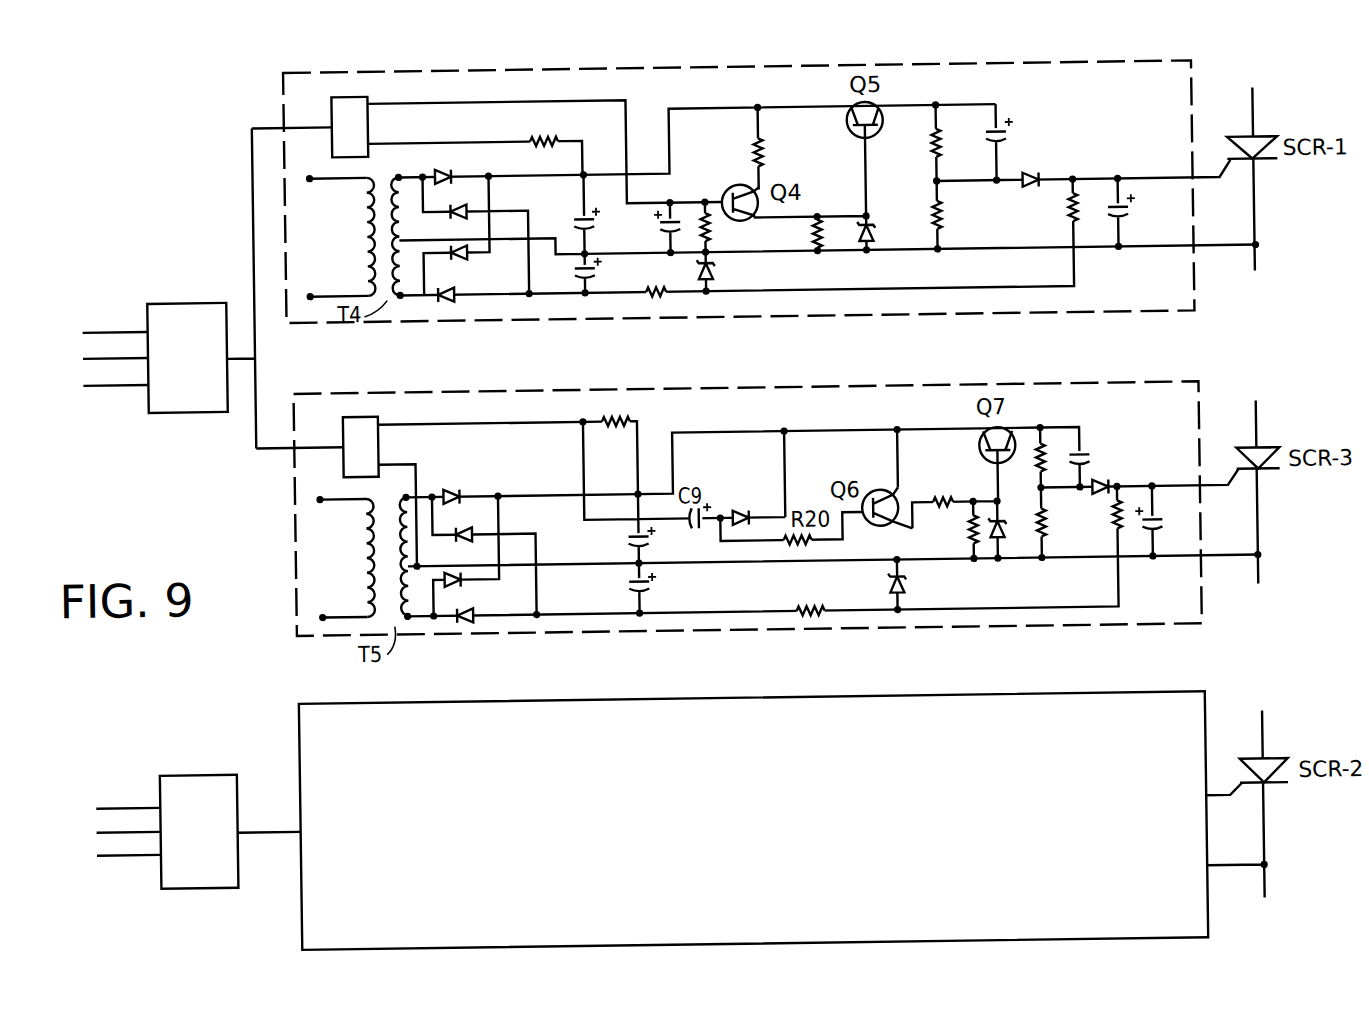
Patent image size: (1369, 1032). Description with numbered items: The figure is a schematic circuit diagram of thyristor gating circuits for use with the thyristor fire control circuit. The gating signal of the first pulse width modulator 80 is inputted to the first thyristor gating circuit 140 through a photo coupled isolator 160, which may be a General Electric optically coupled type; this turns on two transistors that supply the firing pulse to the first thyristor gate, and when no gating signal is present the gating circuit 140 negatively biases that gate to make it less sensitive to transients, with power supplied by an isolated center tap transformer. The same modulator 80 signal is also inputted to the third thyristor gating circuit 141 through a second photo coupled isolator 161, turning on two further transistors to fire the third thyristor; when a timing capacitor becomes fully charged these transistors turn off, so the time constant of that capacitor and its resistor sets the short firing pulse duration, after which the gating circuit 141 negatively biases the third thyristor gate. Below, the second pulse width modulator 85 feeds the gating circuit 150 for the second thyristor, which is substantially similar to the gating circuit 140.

The PWM-I 80 is at (175, 306).
The PWM-II 85 is at (186, 778).
The SCR-1 gating circuit 140 is at (280, 103).
The SCR-3 gating circuit 141 is at (1133, 398).
The gating circuit for SCR-2 150 is at (1133, 708).
The photo coupled isolator 160 is at (366, 106).
The photo coupled isolator 161 is at (337, 436).